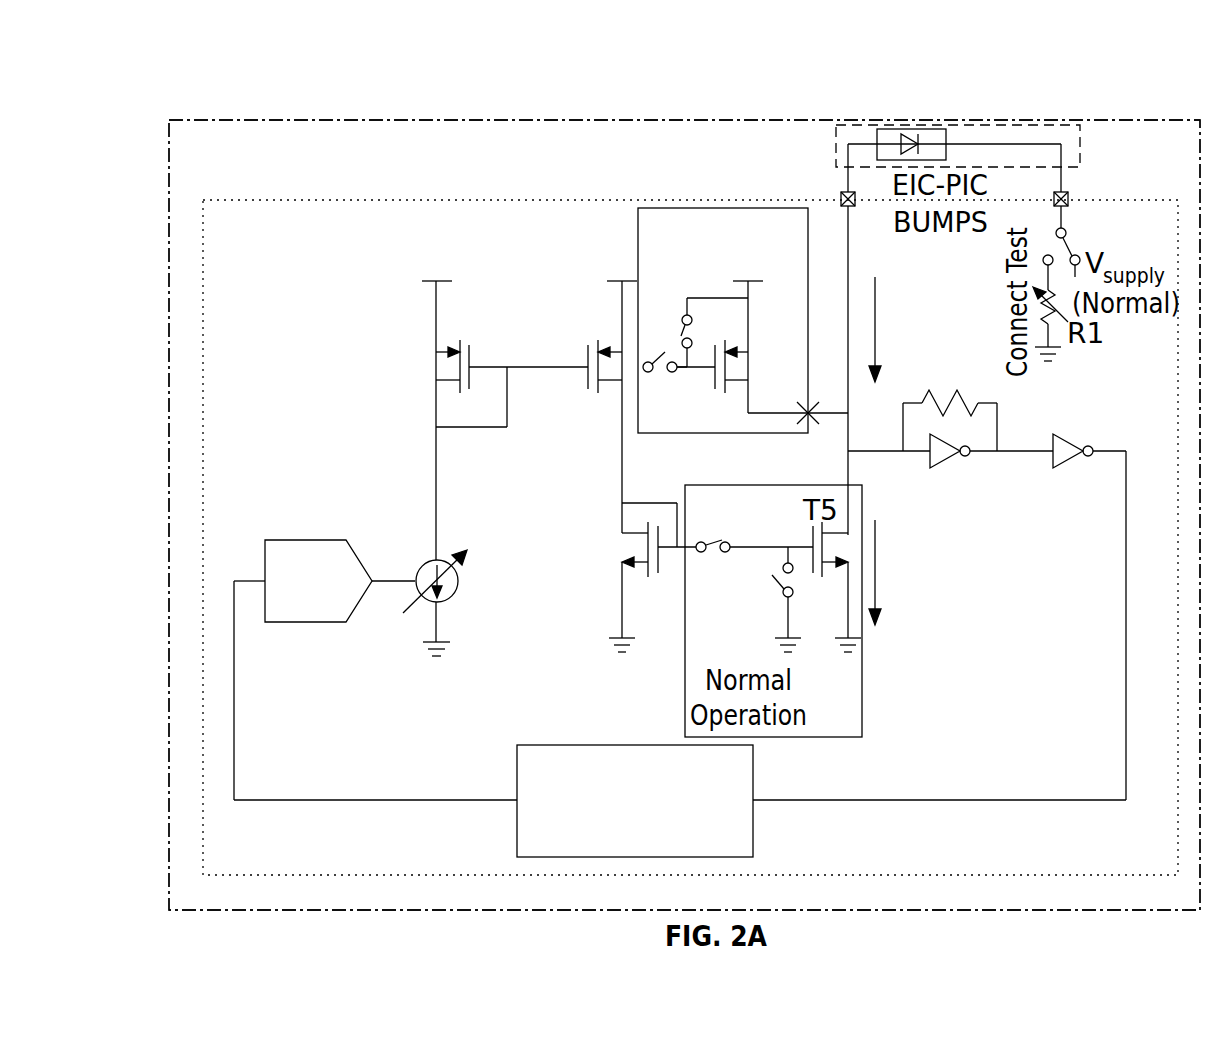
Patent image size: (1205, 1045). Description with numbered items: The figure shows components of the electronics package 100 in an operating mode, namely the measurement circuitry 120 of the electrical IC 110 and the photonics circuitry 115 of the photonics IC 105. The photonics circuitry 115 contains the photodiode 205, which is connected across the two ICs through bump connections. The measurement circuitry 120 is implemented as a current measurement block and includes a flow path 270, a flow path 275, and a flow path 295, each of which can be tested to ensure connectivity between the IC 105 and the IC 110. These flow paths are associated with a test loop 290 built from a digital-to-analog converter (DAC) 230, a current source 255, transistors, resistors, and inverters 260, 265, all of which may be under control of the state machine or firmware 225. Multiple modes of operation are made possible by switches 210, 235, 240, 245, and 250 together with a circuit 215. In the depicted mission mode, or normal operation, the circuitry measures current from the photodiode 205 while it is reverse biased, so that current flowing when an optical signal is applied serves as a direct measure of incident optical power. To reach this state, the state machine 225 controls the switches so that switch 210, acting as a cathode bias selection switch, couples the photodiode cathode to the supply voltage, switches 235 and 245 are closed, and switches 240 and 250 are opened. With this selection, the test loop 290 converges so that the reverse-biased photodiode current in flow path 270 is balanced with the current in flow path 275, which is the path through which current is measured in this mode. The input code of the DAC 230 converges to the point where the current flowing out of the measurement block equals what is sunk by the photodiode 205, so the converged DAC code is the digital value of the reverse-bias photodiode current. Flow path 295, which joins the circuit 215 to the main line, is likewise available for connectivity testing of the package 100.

The electronics package 100 is at (182, 57).
The IC 105 is at (360, 185).
The IC 110 is at (373, 267).
The photonics circuitry 115 is at (1080, 138).
The measurement circuitry 120 is at (336, 322).
The photodiode 205 is at (910, 127).
The switch 210 is at (1068, 232).
The circuit 215 is at (731, 207).
The state machine 225 is at (585, 745).
The digital-to-analog converter (DAC) 230 is at (305, 540).
The switch 235 is at (686, 313).
The switch 240 is at (649, 373).
The switch 245 is at (701, 538).
The switch 250 is at (782, 598).
The current source 255 is at (455, 598).
The inverter 260 is at (1067, 432).
The inverter 265 is at (948, 465).
The flow path 270 is at (848, 250).
The flow path 275 is at (848, 497).
The test loop 290 is at (280, 812).
The flow path 295 is at (783, 418).